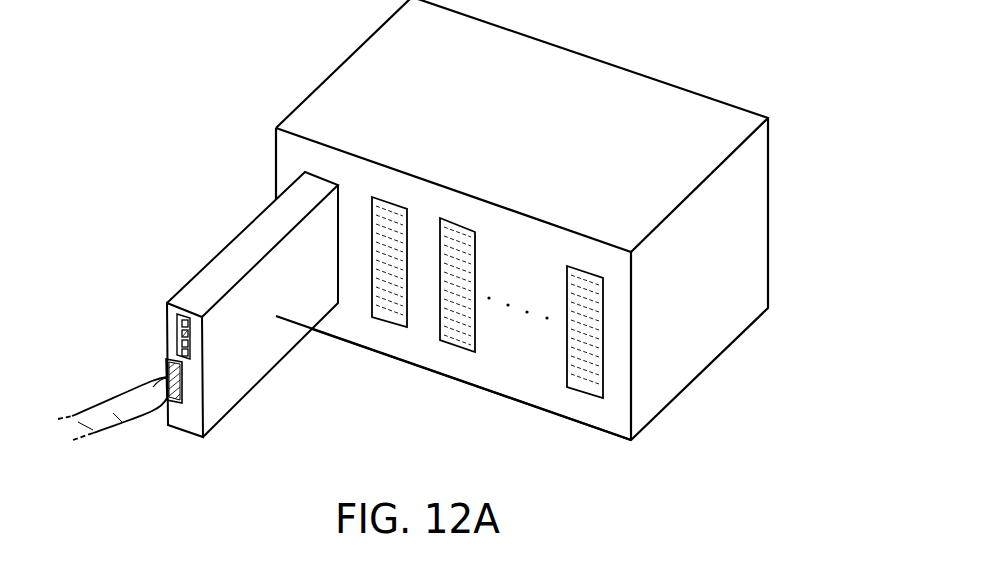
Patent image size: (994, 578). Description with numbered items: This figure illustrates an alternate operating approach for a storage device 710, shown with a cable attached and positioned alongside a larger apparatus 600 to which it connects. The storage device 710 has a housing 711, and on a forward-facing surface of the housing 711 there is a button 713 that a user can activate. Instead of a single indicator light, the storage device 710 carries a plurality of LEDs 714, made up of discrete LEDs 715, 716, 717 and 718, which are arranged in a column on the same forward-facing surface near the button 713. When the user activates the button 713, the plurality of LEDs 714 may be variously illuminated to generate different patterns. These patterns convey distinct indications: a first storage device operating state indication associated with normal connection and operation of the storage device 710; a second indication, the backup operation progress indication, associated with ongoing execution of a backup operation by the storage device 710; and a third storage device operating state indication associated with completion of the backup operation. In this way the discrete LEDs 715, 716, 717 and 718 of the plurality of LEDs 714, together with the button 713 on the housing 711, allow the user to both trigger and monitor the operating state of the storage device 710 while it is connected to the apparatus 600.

The electronic device 600 is at (330, 88).
The storage device 710 is at (198, 331).
The housing 711 is at (197, 288).
The button 713 is at (166, 362).
The plurality of LEDs 714 is at (200, 402).
The discrete LED 715 is at (189, 324).
The discrete LED 716 is at (189, 333).
The discrete LED 717 is at (189, 343).
The discrete LED 718 is at (189, 353).